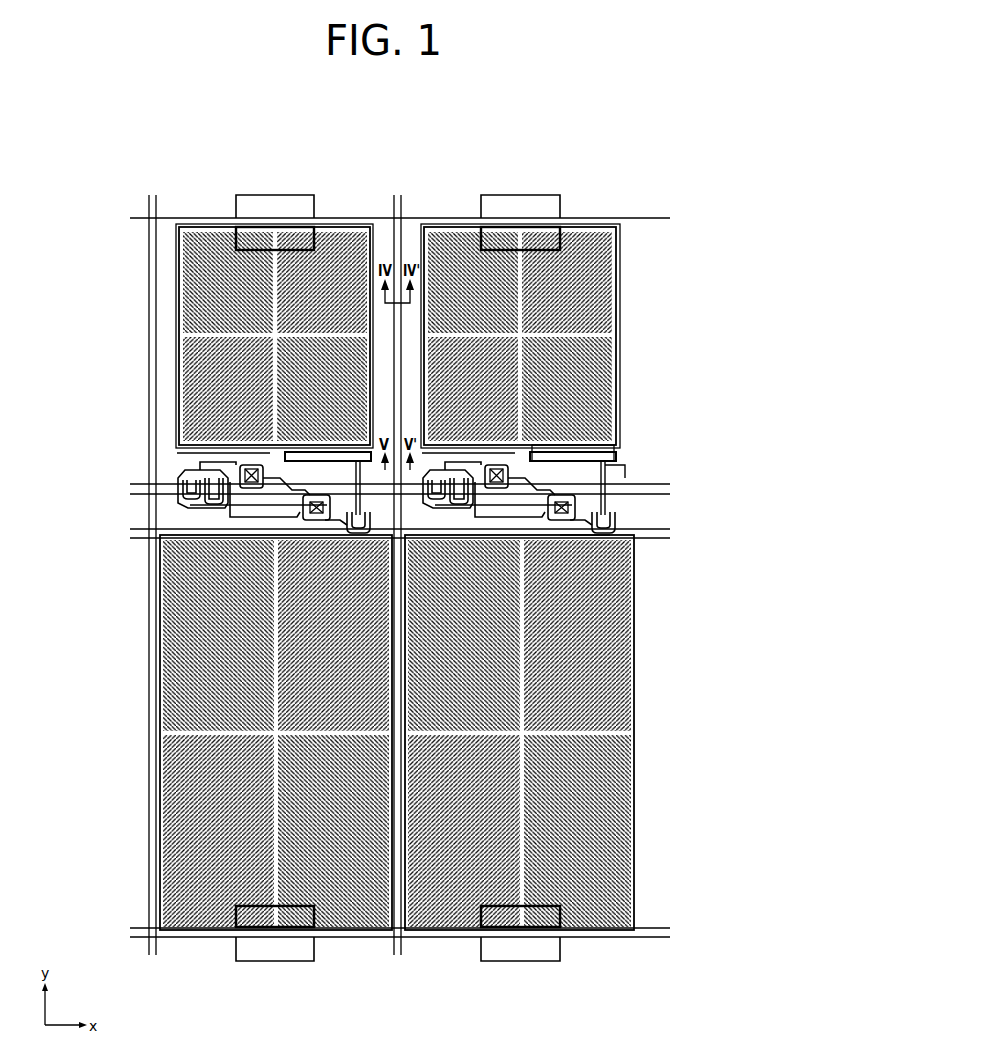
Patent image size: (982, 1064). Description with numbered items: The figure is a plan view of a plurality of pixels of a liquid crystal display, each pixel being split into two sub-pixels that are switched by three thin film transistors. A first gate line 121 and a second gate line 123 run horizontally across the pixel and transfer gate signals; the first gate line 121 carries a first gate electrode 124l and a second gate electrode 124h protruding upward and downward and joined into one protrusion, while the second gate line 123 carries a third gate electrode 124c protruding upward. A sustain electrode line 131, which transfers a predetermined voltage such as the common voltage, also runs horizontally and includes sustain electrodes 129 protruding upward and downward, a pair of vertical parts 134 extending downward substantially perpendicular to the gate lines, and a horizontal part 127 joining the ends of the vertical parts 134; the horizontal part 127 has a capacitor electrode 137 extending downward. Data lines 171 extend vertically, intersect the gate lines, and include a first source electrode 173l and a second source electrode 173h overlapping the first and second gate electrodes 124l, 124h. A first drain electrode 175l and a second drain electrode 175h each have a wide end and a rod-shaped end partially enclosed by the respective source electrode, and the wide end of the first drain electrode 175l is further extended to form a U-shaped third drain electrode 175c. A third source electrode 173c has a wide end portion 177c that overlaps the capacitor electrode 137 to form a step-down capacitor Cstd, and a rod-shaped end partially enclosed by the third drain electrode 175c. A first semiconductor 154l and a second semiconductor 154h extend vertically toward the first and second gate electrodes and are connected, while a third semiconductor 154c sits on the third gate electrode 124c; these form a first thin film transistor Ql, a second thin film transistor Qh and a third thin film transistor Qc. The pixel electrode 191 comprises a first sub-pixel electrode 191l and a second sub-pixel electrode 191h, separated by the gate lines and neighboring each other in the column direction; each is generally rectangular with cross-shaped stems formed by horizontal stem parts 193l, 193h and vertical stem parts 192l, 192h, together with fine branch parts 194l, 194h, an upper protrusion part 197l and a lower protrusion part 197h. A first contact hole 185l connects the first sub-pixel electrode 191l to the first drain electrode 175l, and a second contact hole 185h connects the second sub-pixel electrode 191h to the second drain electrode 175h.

The first gate line 121 is at (650, 481).
The second gate line 123 is at (640, 540).
The second gate electrode 124h is at (197, 507).
The first gate electrode 124l is at (216, 468).
The third gate electrode 124c is at (618, 518).
The horizontal part 127 is at (180, 456).
The sustain electrode 129 is at (308, 216).
The sustain electrode line 131 is at (360, 226).
The vertical part 134 is at (620, 290).
The capacitor electrode 137 is at (620, 475).
The second semiconductor 154h is at (190, 486).
The first semiconductor 154l is at (235, 510).
The third semiconductor 154c is at (595, 535).
The data line 171 is at (152, 240).
The second source electrode 173h is at (185, 490).
The first source electrode 173l is at (236, 462).
The third source electrode 173c is at (618, 502).
The second drain electrode 175h is at (172, 473).
The first drain electrode 175l is at (227, 502).
The third drain electrode 175c is at (575, 522).
The end portion of third source electrode 177c is at (570, 470).
The second contact hole 185h is at (300, 512).
The first contact hole 185l is at (590, 540).
The pixel electrode 191 is at (702, 874).
The second sub-pixel electrode 191h is at (583, 327).
The first sub-pixel electrode 191l is at (83, 862).
The vertical stem part 192h is at (278, 250).
The vertical stem part 192l is at (520, 690).
The horizontal stem part 193h is at (184, 337).
The horizontal stem part 193l is at (165, 737).
The fine branch parts 194h is at (197, 294).
The fine branch parts 194l is at (180, 688).
The lower protrusion part 197h is at (340, 522).
The upper protrusion part 197l is at (600, 545).
The second thin film transistor Qh is at (178, 487).
The first thin film transistor Ql is at (205, 470).
The third thin film transistor Qc is at (585, 528).
The step-down capacitor Cstd is at (582, 446).